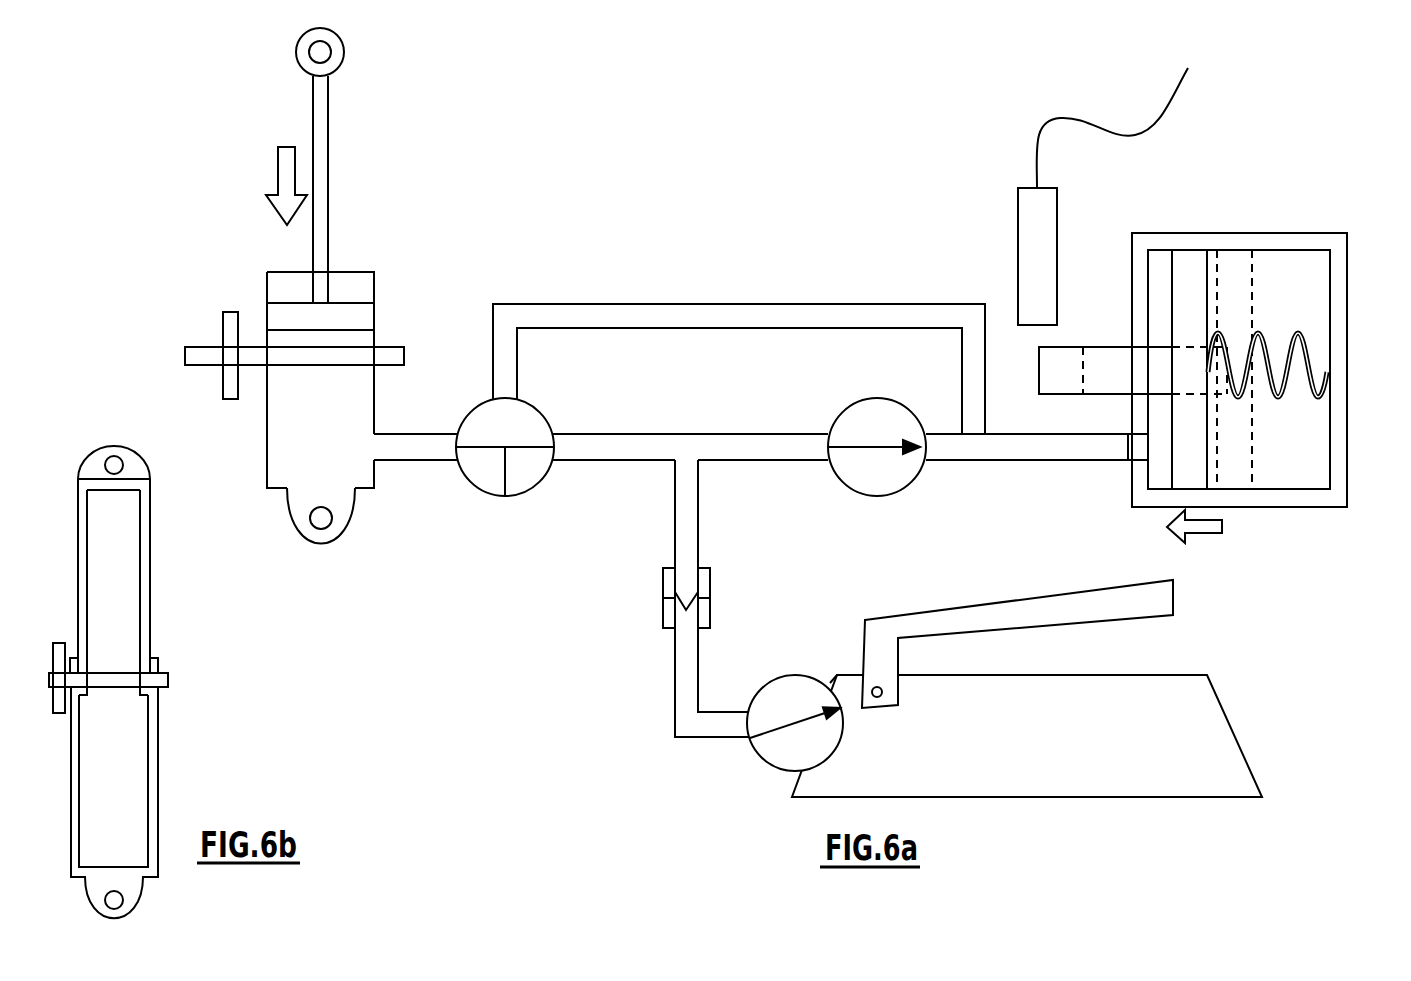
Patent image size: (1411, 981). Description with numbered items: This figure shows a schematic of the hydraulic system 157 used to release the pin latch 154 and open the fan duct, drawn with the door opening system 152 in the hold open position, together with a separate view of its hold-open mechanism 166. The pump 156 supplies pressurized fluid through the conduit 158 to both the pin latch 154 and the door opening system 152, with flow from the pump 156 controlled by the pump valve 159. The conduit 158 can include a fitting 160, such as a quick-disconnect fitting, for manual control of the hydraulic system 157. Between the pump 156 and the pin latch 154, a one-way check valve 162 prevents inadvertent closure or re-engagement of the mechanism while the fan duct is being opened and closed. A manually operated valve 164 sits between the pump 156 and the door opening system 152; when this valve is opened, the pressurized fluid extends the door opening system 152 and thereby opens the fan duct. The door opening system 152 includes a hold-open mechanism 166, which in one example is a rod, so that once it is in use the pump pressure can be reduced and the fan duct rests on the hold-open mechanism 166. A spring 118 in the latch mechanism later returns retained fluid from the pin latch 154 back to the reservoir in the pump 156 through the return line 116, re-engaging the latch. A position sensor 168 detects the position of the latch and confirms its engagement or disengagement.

In FIG. 6a, the return line 116 is at (708, 303).
In FIG. 6a, the spring 118 is at (1325, 397).
In FIG. 6a, the door opening system 152 is at (358, 316).
In FIG. 6b, the door opening system 152 is at (158, 775).
In FIG. 6a, the pin latch 154 is at (1242, 233).
In FIG. 6a, the pump 156 is at (1220, 707).
In FIG. 6a, the hydraulic system 157 is at (574, 621).
In FIG. 6a, the conduit 158 is at (680, 663).
In FIG. 6a, the pump valve 159 is at (763, 760).
In FIG. 6a, the fitting 160 is at (710, 585).
In FIG. 6a, the one-way check valve 162 is at (900, 493).
In FIG. 6a, the manually operated valve 164 is at (515, 497).
In FIG. 6a, the hold-open mechanism 166 is at (197, 346).
In FIG. 6b, the hold-open mechanism 166 is at (168, 680).
In FIG. 6a, the position sensor 168 is at (1018, 218).